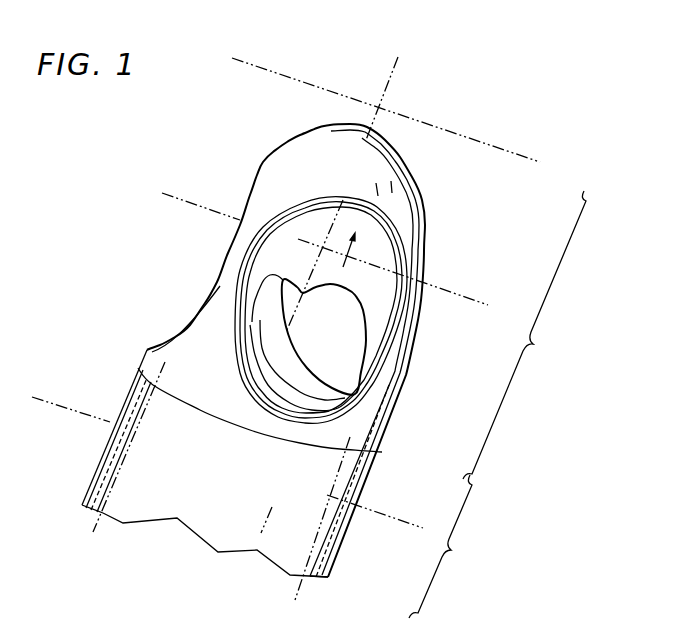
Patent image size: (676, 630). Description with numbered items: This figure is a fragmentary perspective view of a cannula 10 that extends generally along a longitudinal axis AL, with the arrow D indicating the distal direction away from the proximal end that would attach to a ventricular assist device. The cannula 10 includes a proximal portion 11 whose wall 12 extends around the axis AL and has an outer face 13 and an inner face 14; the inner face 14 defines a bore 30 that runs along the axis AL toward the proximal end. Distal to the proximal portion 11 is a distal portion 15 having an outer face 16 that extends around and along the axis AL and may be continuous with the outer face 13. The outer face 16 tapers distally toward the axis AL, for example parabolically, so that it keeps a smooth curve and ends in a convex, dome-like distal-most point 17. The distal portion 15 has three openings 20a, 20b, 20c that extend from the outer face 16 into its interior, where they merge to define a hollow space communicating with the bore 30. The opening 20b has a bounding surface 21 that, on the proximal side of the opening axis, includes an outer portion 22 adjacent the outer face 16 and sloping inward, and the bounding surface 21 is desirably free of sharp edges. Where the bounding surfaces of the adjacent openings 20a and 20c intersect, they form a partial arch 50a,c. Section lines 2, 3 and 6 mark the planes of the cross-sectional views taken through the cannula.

The section line 2- 2 is at (251, 55).
The section line 3- 3 is at (58, 414).
The section line 6- 6 is at (174, 206).
The cannula 10 is at (161, 258).
The proximal portion 11 is at (454, 551).
The wall 12 is at (338, 563).
The outer face 13 is at (373, 465).
The inner face 14 is at (145, 423).
The distal portion 15 is at (536, 344).
The outer face 16 is at (405, 211).
The distal-most point 17 is at (376, 135).
The opening 20a is at (318, 339).
The opening 20b is at (212, 288).
The opening 20c is at (381, 387).
The bounding surface 21 is at (393, 360).
The outer portion 22 is at (360, 398).
The bore 30 is at (218, 482).
The partial arch 50a,c is at (365, 281).
The longitudinal axis AL is at (400, 72).
The distal direction D is at (356, 243).